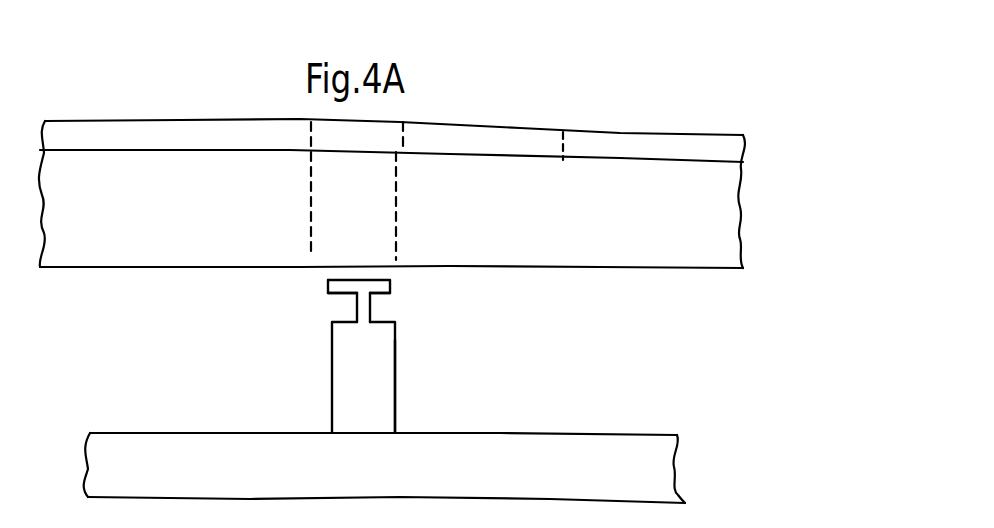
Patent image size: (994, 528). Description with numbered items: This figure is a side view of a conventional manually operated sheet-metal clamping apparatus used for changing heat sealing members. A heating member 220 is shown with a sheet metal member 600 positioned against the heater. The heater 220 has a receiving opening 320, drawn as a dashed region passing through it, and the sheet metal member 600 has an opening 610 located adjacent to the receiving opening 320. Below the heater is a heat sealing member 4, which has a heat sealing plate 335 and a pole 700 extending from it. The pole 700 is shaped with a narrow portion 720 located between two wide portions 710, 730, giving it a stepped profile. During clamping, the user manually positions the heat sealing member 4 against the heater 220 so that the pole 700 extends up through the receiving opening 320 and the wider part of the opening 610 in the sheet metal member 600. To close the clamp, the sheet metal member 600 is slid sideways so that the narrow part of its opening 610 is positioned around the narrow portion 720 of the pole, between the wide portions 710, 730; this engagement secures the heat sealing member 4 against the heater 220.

The heat sealing member 4 is at (737, 385).
The heating member 220 is at (590, 234).
The receiving opening 320 is at (310, 200).
The heat sealing plate 335 is at (572, 486).
The sheet metal member 600 is at (688, 132).
The opening 610 is at (493, 115).
The pole 700 is at (330, 382).
The wide portion 710 is at (328, 287).
The narrow portion 720 is at (357, 305).
The wide portion 730 is at (397, 393).